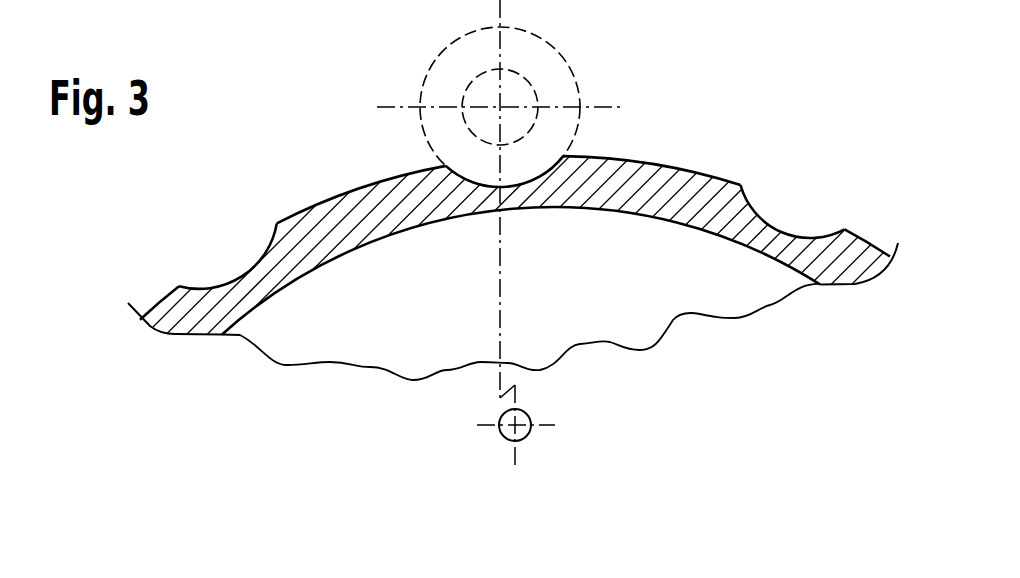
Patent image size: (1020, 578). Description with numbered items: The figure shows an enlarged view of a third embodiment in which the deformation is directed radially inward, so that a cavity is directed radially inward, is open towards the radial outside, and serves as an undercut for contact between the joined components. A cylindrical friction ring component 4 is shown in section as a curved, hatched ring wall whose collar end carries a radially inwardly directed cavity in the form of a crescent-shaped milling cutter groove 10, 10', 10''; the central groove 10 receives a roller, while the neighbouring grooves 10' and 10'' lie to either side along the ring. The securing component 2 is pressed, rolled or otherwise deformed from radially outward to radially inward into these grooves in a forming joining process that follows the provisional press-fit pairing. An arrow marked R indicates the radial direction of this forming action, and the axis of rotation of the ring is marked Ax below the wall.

The securing component 2 is at (510, 230).
The cylindrical friction ring component 4 is at (681, 195).
The crescent-shaped milling cutter groove 10 is at (565, 286).
The crescent-shaped milling cutter groove 10' is at (793, 277).
The crescent-shaped milling cutter groove 10'' is at (231, 325).
The radial direction R is at (500, 243).
The axis of rotation Ax is at (517, 428).